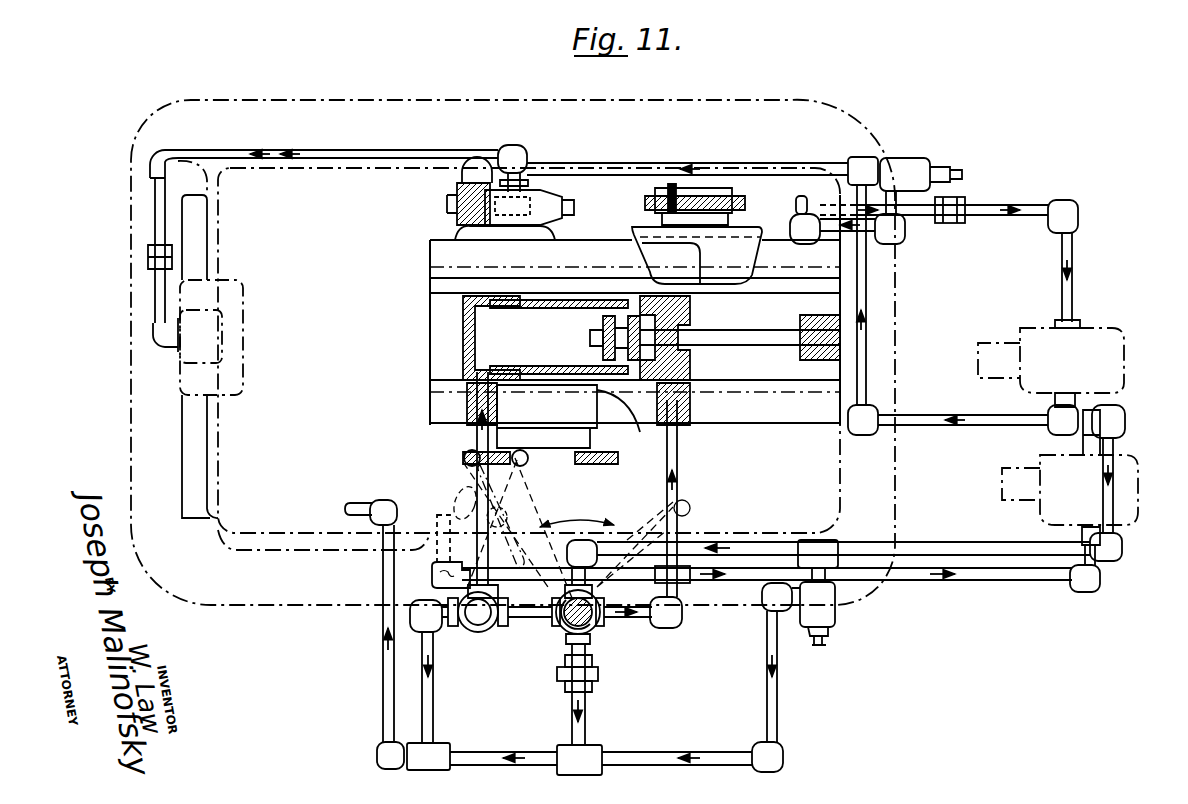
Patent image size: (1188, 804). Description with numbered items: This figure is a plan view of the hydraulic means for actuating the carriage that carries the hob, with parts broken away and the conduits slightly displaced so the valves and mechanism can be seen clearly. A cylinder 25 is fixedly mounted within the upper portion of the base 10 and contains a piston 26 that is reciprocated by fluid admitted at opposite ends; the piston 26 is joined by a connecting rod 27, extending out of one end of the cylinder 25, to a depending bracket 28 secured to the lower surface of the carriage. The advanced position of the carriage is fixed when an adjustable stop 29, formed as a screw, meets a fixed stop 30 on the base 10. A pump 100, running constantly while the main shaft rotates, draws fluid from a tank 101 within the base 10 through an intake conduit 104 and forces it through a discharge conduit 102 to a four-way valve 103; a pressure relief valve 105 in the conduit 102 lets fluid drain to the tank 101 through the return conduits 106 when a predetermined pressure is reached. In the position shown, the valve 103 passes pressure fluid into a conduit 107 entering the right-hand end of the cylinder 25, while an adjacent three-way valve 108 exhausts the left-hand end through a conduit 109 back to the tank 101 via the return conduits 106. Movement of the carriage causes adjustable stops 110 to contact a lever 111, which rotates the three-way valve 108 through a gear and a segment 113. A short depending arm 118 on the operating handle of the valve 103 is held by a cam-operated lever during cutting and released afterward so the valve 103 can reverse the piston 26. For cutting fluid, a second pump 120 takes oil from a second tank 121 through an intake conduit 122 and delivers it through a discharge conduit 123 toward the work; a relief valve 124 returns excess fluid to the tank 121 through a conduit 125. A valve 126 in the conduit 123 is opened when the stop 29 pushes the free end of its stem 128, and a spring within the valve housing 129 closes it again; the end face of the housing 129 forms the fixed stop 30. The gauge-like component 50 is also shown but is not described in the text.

The base 10 is at (215, 487).
The cylinder 25 is at (580, 300).
The piston 26 is at (622, 312).
The connecting rod 27 is at (752, 330).
The depending bracket 28 is at (800, 350).
The adjustable stop 29 is at (660, 195).
The fixed stop 30 is at (558, 218).
The gauge housing 50 is at (188, 354).
The pump 100 is at (1120, 460).
The tank 101 is at (215, 528).
The discharge conduit 102 is at (940, 550).
The four-way valve 103 is at (596, 628).
The intake conduit 104 is at (1018, 578).
The pressure relief valve 105 is at (828, 608).
The return conduits 106 is at (383, 580).
The conduit 107 is at (680, 448).
The three-way valve 108 is at (490, 632).
The conduit 109 is at (475, 440).
The adjustable stops 110 is at (525, 455).
The lever 111 is at (428, 392).
The segment 113 is at (448, 586).
The short depending arm 118 is at (690, 516).
The second pump 120 is at (1090, 330).
The second tank 121 is at (778, 185).
The intake conduit 122 is at (1022, 210).
The discharge conduit 123 is at (378, 152).
The relief valve 124 is at (910, 160).
The conduit 125 is at (870, 240).
The valve 126 is at (488, 210).
The stem 128 is at (565, 205).
The valve housing 129 is at (455, 216).